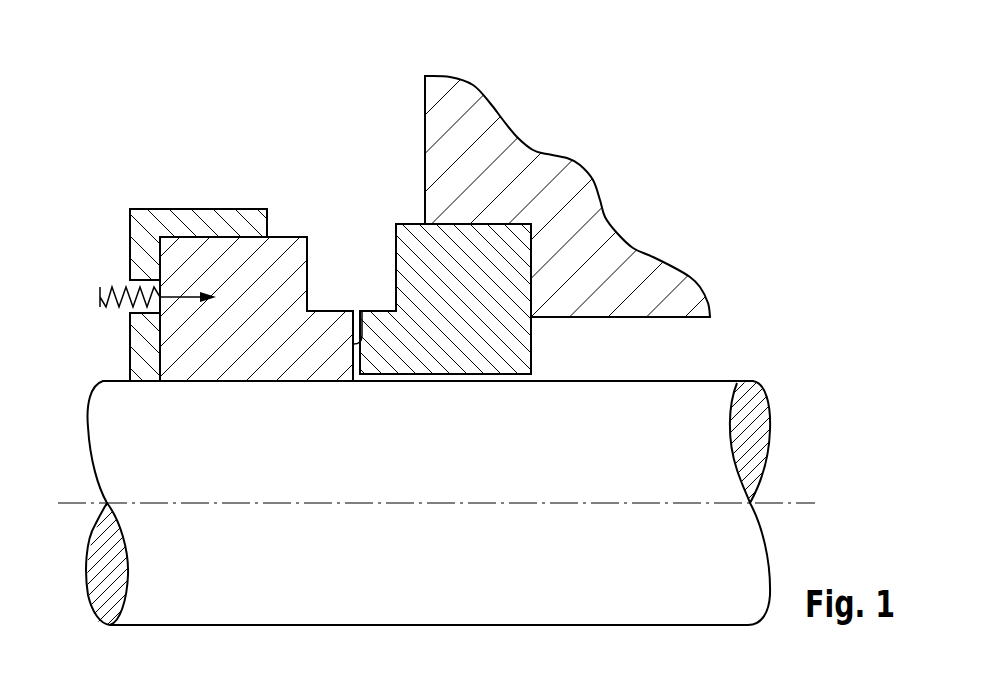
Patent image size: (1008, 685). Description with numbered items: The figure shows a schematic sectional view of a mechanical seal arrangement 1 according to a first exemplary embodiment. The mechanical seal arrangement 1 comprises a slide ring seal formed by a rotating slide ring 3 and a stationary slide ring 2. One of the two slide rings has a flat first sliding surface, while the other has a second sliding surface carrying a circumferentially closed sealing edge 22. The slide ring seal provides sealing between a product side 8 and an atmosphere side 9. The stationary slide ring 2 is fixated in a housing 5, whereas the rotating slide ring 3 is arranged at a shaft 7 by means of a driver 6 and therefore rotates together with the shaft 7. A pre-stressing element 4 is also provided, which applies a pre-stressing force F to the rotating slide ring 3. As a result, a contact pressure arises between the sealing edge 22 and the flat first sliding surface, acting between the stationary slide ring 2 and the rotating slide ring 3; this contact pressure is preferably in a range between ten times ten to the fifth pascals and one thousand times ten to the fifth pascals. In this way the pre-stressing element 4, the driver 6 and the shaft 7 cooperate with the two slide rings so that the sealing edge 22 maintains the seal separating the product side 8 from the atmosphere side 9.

The mechanical seal arrangement 1 is at (352, 152).
The stationary slide ring 2 is at (497, 237).
The rotating slide ring 3 is at (288, 247).
The pre-stressing element 4 is at (100, 298).
The housing 5 is at (462, 95).
The driver 6 is at (150, 223).
The shaft 7 is at (707, 400).
The product side 8 is at (345, 222).
The atmosphere side 9 is at (640, 365).
The sealing edge 22 is at (365, 310).
The pre-stressing force F is at (180, 293).